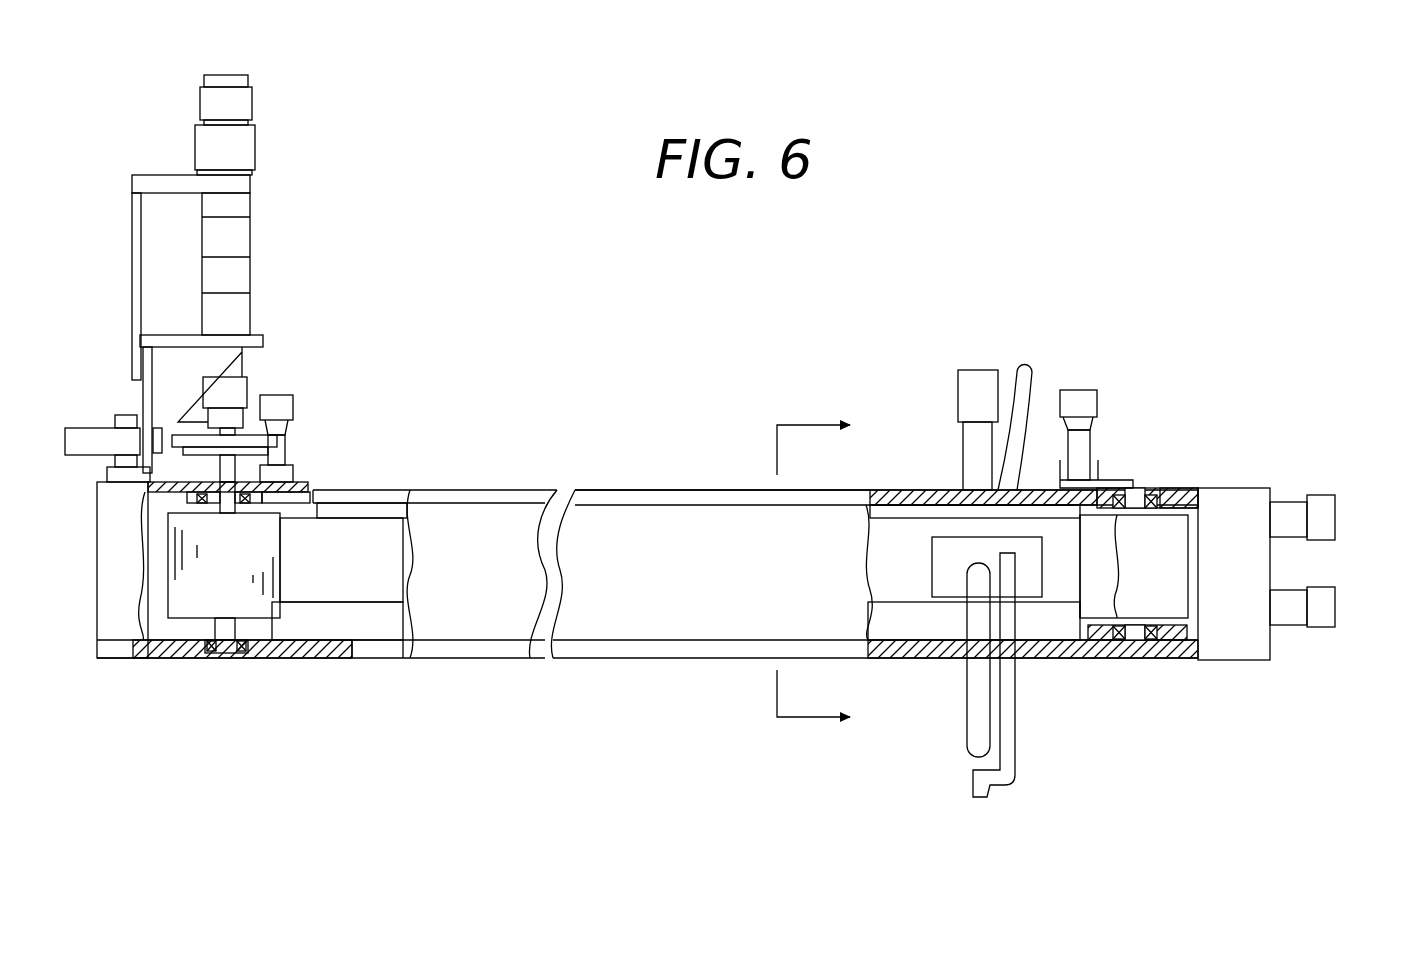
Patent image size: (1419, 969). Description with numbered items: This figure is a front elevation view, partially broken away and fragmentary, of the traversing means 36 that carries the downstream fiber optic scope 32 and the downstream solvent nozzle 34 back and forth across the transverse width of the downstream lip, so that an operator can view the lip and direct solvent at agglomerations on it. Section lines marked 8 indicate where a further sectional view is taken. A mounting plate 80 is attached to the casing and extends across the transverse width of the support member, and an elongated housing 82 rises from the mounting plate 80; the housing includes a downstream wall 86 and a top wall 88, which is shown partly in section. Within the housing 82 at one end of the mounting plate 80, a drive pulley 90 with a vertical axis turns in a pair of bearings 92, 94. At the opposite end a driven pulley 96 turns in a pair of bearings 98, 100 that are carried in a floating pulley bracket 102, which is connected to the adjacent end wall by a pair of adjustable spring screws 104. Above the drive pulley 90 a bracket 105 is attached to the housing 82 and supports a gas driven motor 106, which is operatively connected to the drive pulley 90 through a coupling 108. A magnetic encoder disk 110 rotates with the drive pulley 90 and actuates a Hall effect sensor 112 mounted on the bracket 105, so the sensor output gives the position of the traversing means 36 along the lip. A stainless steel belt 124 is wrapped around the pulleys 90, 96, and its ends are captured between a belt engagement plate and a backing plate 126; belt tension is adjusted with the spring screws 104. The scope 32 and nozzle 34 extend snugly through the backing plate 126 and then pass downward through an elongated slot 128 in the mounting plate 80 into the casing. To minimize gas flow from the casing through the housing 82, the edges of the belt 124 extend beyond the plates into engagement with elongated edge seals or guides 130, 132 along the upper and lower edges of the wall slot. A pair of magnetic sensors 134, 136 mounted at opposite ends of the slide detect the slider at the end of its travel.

The section line 8- 8 is at (818, 571).
The downstream fiber optic scope 32 is at (983, 383).
The downstream solvent nozzle 34 is at (1027, 398).
The traversing means 36 is at (292, 358).
The mounting plate 80 is at (152, 653).
The elongated housing 82 is at (612, 484).
The downstream wall 86 is at (487, 580).
The top wall 88 is at (457, 495).
The drive pulley 90 is at (258, 645).
The bearing 92 is at (232, 518).
The bearing 94 is at (208, 640).
The driven pulley 96 is at (1095, 548).
The bearing 98 is at (1150, 493).
The bearing 100 is at (1120, 640).
The floating pulley bracket 102 is at (1187, 502).
The adjustable spring screws 104 is at (1323, 605).
The bracket 105 is at (130, 207).
The gas driven motor 106 is at (232, 243).
The coupling 108 is at (237, 390).
The magnetic encoder disk 110 is at (282, 443).
The Hall effect sensor 112 is at (92, 428).
The stainless steel belt 124 is at (367, 569).
The backing plate 126 is at (953, 557).
The elongated slot 128 is at (375, 650).
The edge seal or guide 130 is at (875, 515).
The edge seal or guide 132 is at (1047, 617).
The magnetic sensor 134 is at (285, 408).
The magnetic sensor 136 is at (1080, 410).